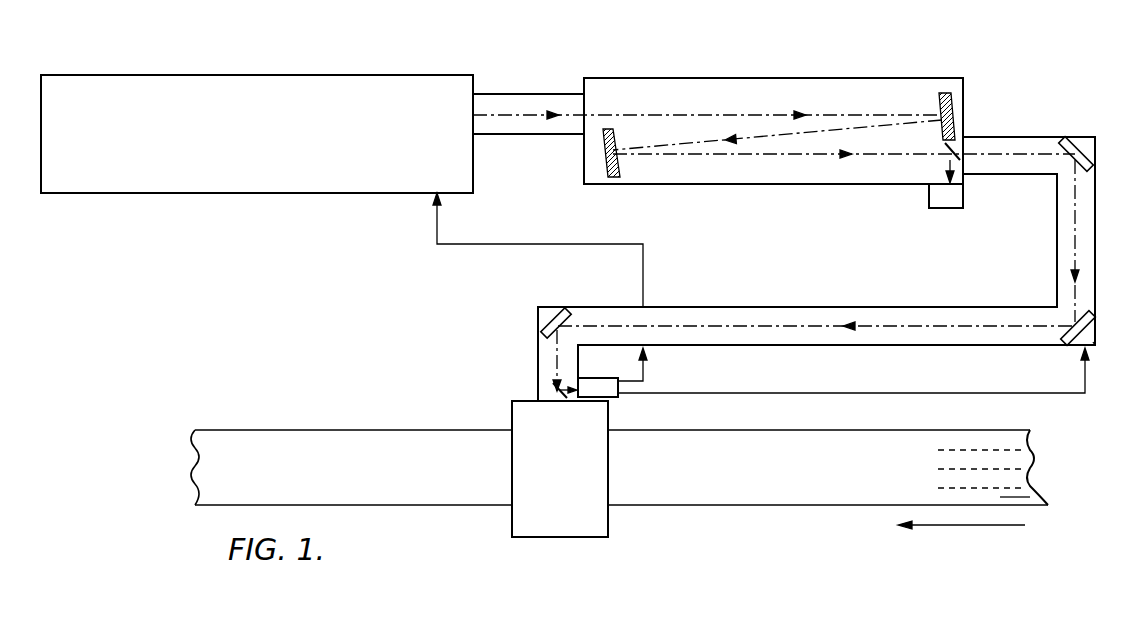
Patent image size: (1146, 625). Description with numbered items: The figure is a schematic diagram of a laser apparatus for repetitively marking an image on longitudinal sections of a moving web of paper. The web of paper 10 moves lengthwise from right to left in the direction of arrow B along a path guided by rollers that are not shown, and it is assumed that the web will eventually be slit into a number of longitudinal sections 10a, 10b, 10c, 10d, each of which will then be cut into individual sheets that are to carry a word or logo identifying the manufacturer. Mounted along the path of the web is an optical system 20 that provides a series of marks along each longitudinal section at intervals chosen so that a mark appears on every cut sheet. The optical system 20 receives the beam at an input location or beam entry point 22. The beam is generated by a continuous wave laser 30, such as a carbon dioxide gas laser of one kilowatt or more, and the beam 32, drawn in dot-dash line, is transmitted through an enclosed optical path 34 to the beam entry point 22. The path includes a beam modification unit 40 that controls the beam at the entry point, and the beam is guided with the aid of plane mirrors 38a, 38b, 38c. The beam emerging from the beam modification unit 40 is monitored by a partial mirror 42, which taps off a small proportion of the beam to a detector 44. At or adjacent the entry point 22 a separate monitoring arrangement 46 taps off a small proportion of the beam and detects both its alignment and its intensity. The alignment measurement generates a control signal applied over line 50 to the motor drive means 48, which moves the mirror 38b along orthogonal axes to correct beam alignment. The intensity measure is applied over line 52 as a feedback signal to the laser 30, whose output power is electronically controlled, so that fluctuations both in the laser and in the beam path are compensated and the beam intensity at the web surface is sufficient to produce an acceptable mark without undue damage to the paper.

The web of paper 10 is at (752, 500).
The longitudinal section 10a is at (1020, 445).
The longitudinal section 10b is at (1022, 464).
The longitudinal section 10c is at (1017, 482).
The longitudinal section 10d is at (1030, 497).
The optical system 20 is at (540, 538).
The beam entry point 22 is at (553, 391).
The continuous wave laser 30 is at (250, 135).
The laser beam 32 is at (525, 112).
The enclosed optical path 34 is at (1057, 251).
The plane mirror 38a is at (1082, 146).
The plane mirror 38b is at (1069, 336).
The plane mirror 38c is at (553, 310).
The beam modification unit 40 is at (738, 77).
The partial mirror 42 is at (963, 137).
The detector 44 is at (929, 200).
The monitoring arrangement 46 is at (612, 370).
The motor drive means 48 is at (1093, 342).
The alignment control signal line 50 is at (952, 393).
The intensity feedback line 52 is at (477, 247).
The direction of web movement B is at (961, 535).